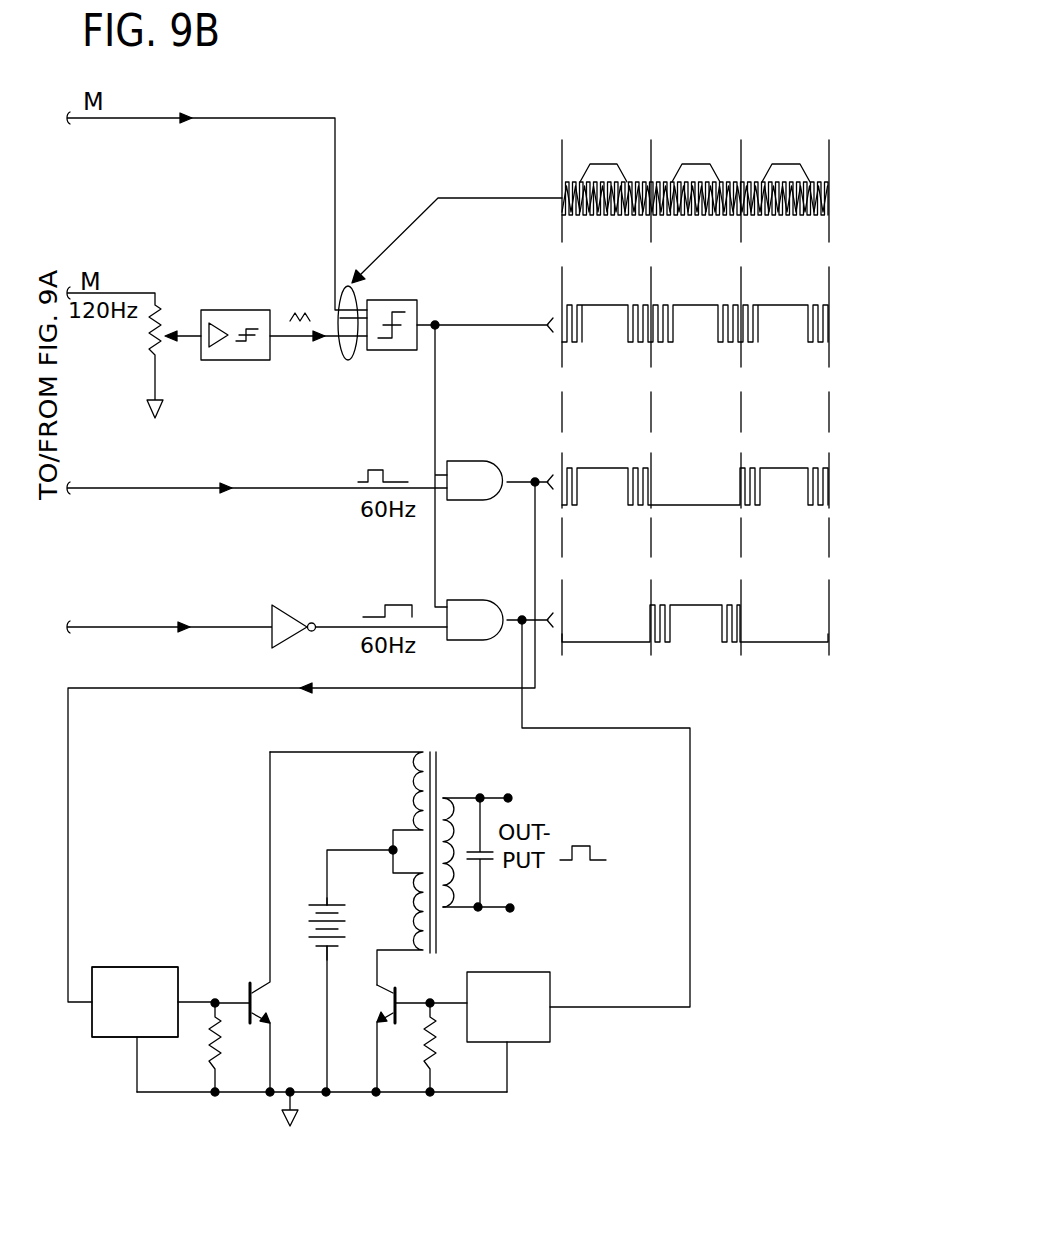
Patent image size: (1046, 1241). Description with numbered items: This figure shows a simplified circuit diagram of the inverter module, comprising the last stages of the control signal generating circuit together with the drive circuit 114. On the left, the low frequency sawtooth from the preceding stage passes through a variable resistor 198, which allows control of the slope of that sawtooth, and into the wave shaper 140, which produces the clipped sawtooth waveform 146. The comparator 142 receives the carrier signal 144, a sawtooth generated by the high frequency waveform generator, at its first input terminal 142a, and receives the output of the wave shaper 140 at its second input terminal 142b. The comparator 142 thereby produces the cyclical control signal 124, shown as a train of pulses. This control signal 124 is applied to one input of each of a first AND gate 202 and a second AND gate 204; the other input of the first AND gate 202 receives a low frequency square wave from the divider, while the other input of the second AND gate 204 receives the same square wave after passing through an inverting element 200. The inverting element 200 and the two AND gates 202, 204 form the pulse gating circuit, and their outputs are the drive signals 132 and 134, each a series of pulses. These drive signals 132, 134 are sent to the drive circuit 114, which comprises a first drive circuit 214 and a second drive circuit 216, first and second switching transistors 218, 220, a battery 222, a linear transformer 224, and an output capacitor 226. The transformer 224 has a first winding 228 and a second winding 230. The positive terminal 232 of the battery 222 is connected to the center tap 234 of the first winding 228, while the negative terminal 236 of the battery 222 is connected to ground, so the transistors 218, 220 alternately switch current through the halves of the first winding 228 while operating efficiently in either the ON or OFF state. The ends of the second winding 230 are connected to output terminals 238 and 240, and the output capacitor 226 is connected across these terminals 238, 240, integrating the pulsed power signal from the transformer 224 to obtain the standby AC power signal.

The drive circuit 114 is at (96, 1066).
The first drive circuit 214 is at (115, 1071).
The second drive circuit 216 is at (560, 1058).
The variable resistor 198 is at (160, 306).
The wave shaper 140 is at (243, 310).
The comparator 142 is at (403, 300).
The first input terminal 142a is at (362, 298).
The second input terminal 142b is at (361, 346).
The carrier signal 144 is at (830, 182).
The clipped sawtooth waveform 146 is at (697, 164).
The control signal 124 is at (836, 322).
The drive signal 132 is at (836, 480).
The drive signal 134 is at (836, 648).
The inverting element 200 is at (282, 610).
The first AND gate 202 is at (487, 500).
The second AND gate 204 is at (495, 566).
The first switching transistor 218 is at (265, 984).
The second switching transistor 220 is at (394, 985).
The battery 222 is at (386, 870).
The linear transformer 224 is at (437, 755).
The output capacitor 226 is at (493, 856).
The first winding 228 is at (412, 787).
The second winding 230 is at (462, 797).
The positive terminal 232 is at (325, 904).
The center tap 234 is at (392, 849).
The negative terminal 236 is at (323, 952).
The output terminal 238 is at (511, 798).
The output terminal 240 is at (511, 910).